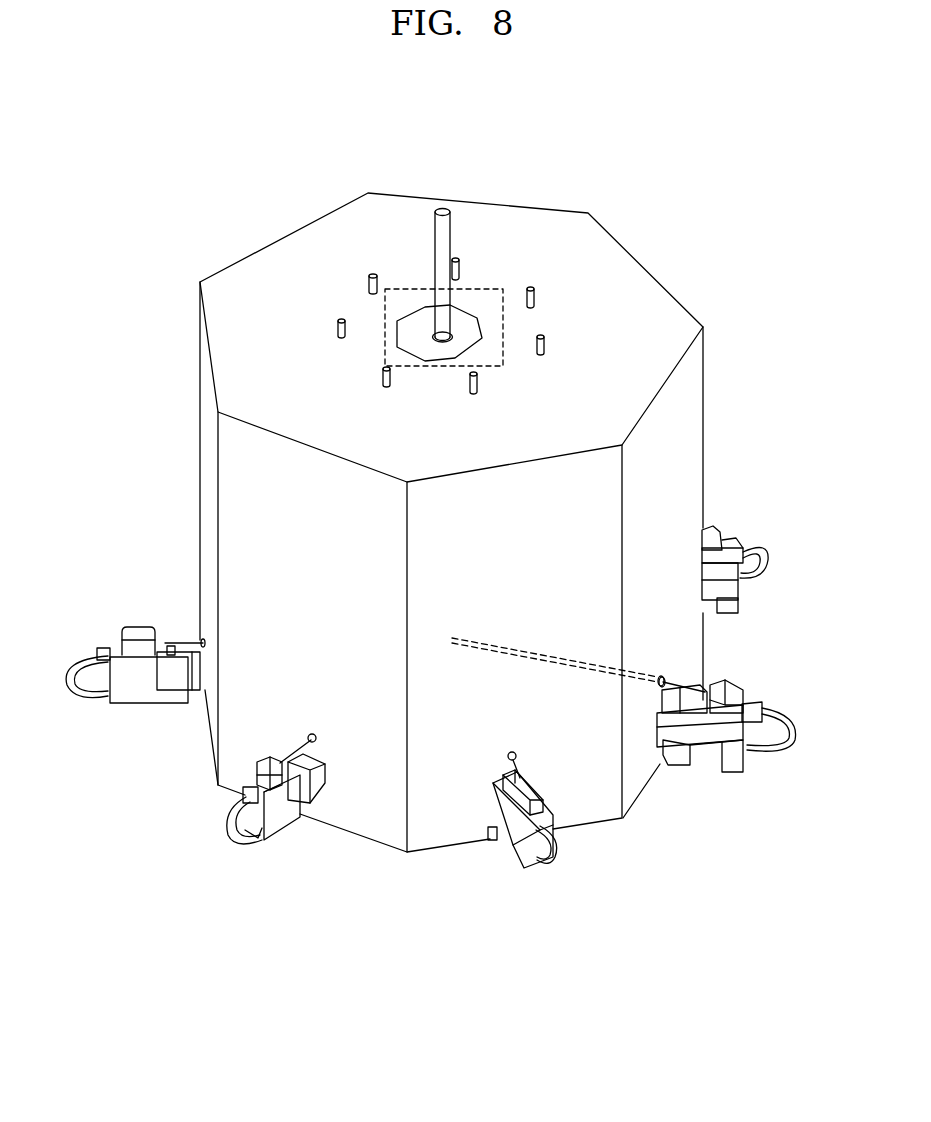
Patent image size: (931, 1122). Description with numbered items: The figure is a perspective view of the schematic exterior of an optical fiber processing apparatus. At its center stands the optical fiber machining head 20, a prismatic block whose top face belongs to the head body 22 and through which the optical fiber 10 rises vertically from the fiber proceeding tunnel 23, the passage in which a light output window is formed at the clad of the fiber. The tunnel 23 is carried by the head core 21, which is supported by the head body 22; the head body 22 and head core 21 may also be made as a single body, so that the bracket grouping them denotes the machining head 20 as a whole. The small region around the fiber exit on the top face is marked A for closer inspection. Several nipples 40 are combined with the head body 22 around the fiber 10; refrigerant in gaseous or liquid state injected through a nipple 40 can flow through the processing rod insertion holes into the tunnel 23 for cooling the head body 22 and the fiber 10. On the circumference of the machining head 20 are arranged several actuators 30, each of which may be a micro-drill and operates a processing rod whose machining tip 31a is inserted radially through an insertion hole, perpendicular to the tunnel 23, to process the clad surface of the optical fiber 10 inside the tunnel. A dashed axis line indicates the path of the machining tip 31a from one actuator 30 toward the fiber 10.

The optical fiber 10 is at (438, 210).
The optical fiber machining head 20 is at (750, 227).
The head core 21 is at (463, 350).
The head body 22 is at (615, 266).
The fiber proceeding tunnel 23 is at (463, 317).
The actuator 30 is at (717, 520).
The machining tip 31a is at (453, 640).
The nipple 40 is at (373, 270).
The detail region A is at (493, 288).